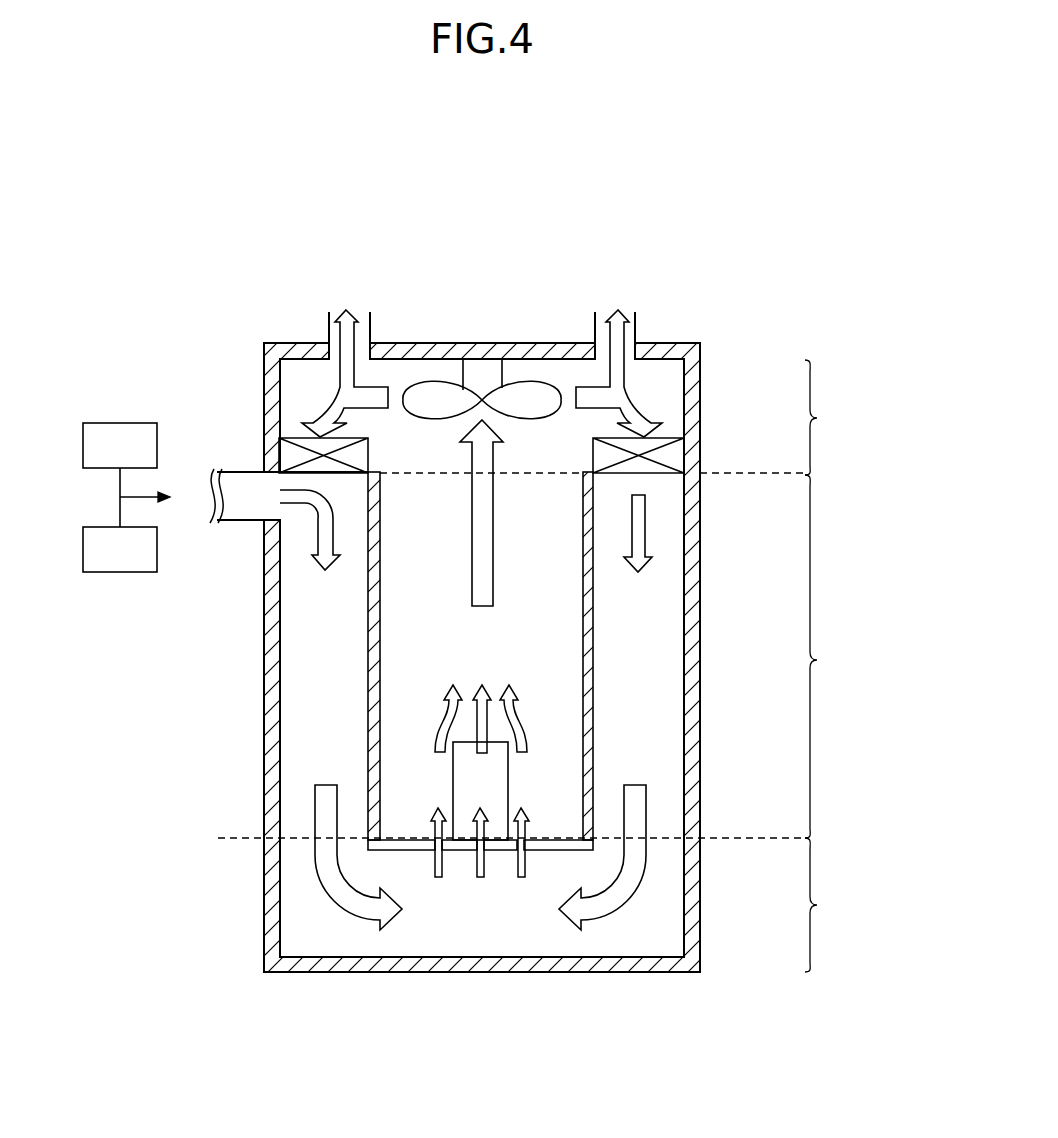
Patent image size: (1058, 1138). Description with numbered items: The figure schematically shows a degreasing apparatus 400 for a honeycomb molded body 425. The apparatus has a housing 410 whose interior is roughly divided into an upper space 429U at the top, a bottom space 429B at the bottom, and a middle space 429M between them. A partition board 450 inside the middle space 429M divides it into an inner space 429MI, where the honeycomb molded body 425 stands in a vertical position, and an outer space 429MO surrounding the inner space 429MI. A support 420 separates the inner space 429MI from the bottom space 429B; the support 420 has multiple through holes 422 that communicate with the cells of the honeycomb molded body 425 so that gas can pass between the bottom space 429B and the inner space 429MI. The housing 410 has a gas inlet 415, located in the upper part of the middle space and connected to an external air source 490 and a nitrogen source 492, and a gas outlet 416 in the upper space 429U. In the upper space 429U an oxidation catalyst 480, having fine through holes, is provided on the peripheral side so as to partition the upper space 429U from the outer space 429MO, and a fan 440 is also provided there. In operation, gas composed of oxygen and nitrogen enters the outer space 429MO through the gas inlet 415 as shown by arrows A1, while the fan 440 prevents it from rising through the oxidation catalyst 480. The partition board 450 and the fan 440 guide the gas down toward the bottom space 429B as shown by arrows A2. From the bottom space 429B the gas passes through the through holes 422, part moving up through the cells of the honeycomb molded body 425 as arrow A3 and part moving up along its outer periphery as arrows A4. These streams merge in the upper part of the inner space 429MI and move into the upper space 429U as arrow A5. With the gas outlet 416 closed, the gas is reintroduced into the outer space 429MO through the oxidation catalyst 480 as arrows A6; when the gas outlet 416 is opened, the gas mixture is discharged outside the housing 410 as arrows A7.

The degreasing apparatus 400 is at (263, 209).
The housing 410 is at (533, 342).
The gas inlet 415 is at (237, 473).
The gas outlet 416 is at (329, 330).
The support 420 is at (553, 850).
The through holes 422 is at (470, 840).
The honeycomb molded body 425 is at (508, 768).
The upper space 429U is at (634, 417).
The middle space 429M is at (555, 656).
The outer space 429MO is at (288, 667).
The inner space 429MI is at (570, 668).
The bottom space 429B is at (846, 905).
The fan 440 is at (433, 382).
The partition board 450 is at (370, 734).
The oxidation catalyst 480 is at (300, 437).
The air source 490 is at (120, 423).
The nitrogen source 492 is at (120, 573).
The arrows A1 is at (317, 528).
The arrows A2 is at (365, 922).
The arrow A3 is at (480, 877).
The arrows A4 is at (438, 877).
The arrow A5 is at (495, 555).
The arrows A6 is at (290, 378).
The arrows A7 is at (355, 332).